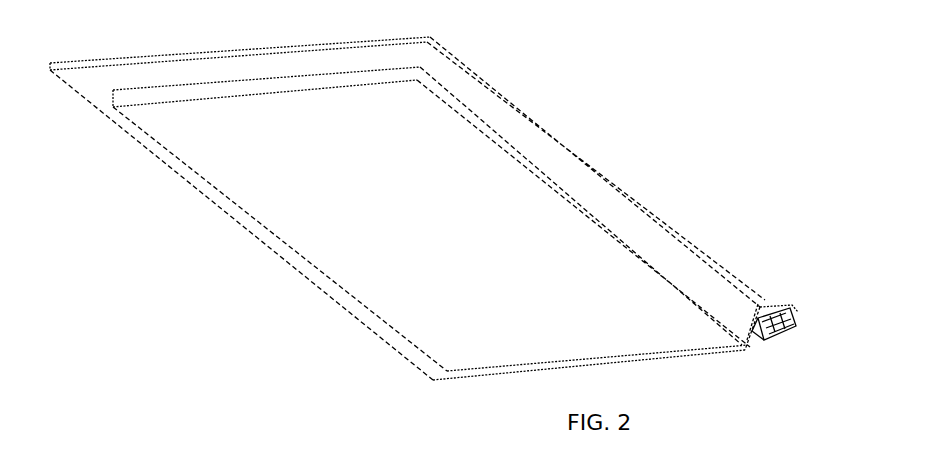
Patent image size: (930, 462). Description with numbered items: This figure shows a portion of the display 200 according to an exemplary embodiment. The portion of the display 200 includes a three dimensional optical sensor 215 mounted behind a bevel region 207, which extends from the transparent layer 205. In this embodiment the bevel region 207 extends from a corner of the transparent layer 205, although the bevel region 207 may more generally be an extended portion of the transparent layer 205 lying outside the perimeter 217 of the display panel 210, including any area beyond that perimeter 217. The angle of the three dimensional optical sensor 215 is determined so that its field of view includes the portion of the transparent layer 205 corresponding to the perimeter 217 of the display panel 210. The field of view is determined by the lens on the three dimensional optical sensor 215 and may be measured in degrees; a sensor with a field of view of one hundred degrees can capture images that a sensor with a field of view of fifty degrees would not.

The display 200 is at (673, 204).
The transparent layer 205 is at (711, 262).
The bevel region 207 is at (797, 315).
The display panel 210 is at (640, 320).
The three dimensional optical sensor 215 is at (763, 345).
The perimeter 217 is at (745, 338).